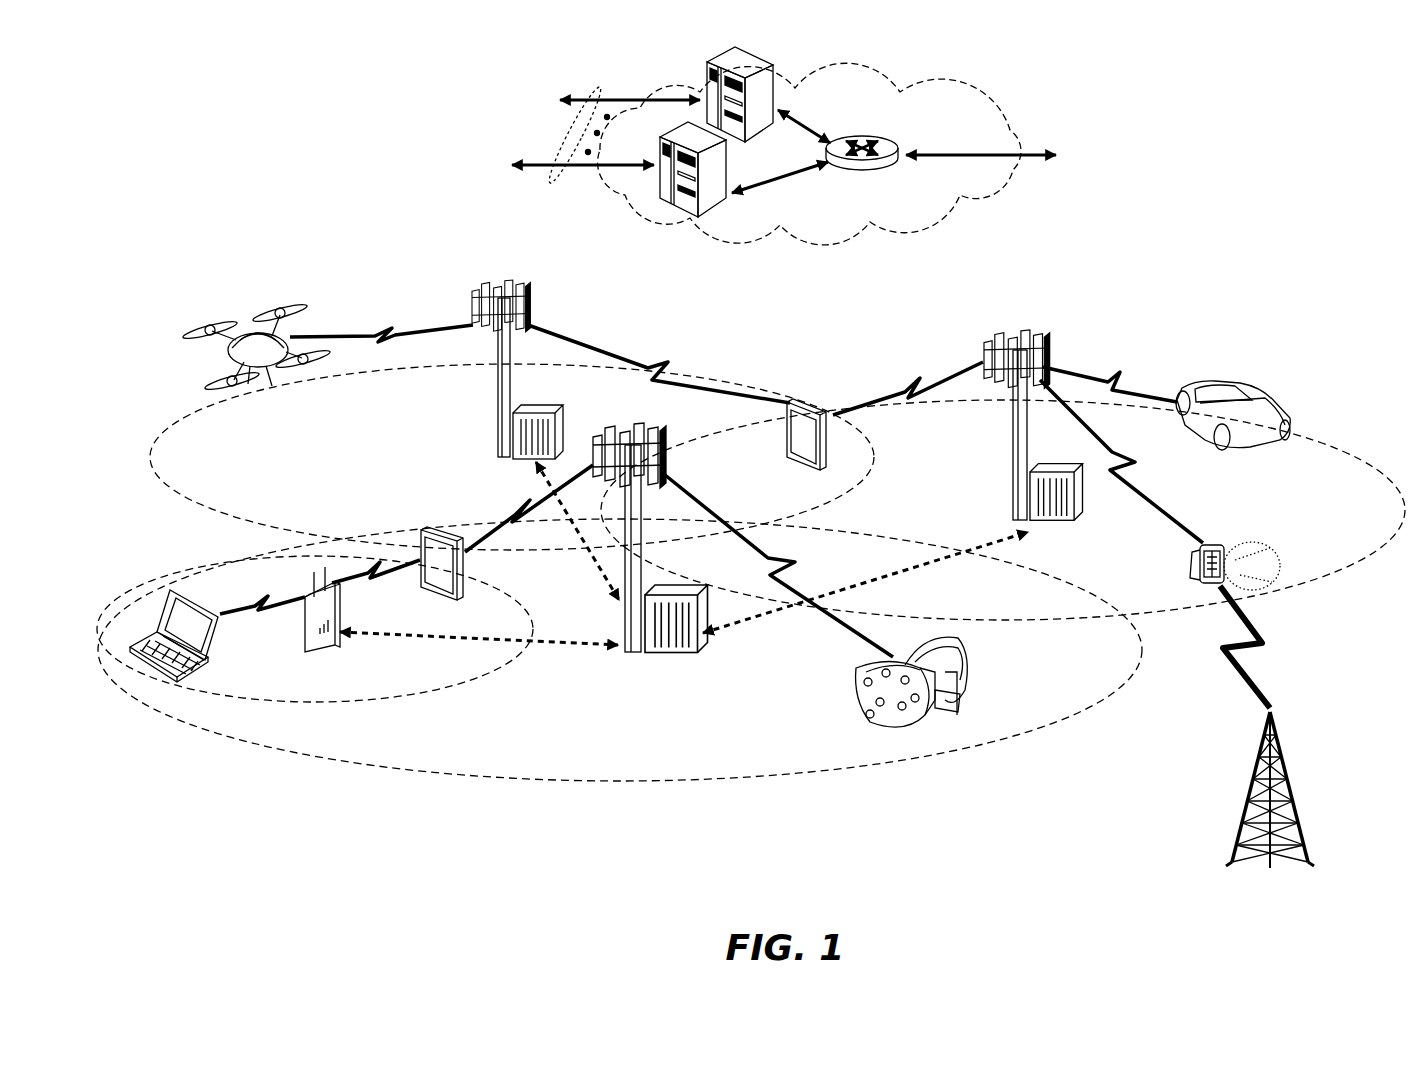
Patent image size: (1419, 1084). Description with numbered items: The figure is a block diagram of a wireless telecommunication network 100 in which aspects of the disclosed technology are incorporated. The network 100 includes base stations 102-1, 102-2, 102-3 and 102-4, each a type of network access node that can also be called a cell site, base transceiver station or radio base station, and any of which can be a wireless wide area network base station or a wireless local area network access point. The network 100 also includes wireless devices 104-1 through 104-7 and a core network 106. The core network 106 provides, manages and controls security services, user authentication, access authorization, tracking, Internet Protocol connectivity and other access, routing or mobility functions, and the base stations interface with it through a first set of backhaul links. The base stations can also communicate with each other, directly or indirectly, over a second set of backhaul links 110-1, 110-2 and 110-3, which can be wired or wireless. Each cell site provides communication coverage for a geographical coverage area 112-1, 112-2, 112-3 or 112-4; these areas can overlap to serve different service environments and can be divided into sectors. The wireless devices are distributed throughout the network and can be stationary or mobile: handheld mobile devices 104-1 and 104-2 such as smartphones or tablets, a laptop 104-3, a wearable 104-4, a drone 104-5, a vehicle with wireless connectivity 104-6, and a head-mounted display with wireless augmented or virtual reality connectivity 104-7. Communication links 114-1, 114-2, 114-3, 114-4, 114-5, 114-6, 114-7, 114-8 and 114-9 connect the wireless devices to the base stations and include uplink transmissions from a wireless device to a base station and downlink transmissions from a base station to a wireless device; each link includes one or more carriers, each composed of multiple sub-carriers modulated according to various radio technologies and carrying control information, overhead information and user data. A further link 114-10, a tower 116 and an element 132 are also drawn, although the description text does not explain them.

The wireless telecommunication network 100 is at (1304, 147).
The base station 102-1 is at (633, 655).
The base station 102-2 is at (492, 412).
The base station 102-3 is at (1012, 440).
The base station 102-4 is at (305, 642).
The handheld mobile device 104-1 is at (456, 580).
The handheld mobile device 104-2 is at (784, 440).
The laptop 104-3 is at (155, 678).
The wearable 104-4 is at (1215, 541).
The drone 104-5 is at (270, 380).
The vehicle with wireless connectivity 104-6 is at (1255, 398).
The head-mounted display 104-7 is at (958, 668).
The core network 106 is at (897, 222).
The backhaul link 110-1 is at (372, 641).
The backhaul link 110-2 is at (940, 558).
The backhaul link 110-3 is at (600, 570).
The geographical coverage area 112-1 is at (556, 782).
The geographical coverage area 112-2 is at (438, 696).
The geographical coverage area 112-3 is at (215, 512).
The geographical coverage area 112-4 is at (1315, 436).
The communication link 114-1 is at (790, 560).
The communication link 114-2 is at (515, 518).
The communication link 114-3 is at (262, 618).
The communication link 114-4 is at (368, 578).
The communication link 114-5 is at (390, 336).
The communication link 114-6 is at (655, 365).
The communication link 114-7 is at (905, 385).
The communication link 114-8 is at (1145, 473).
The communication link 114-9 is at (1105, 383).
The wireless communication link 114-10 is at (1262, 645).
The radio tower 116 is at (1292, 792).
The network interface 132 is at (576, 186).